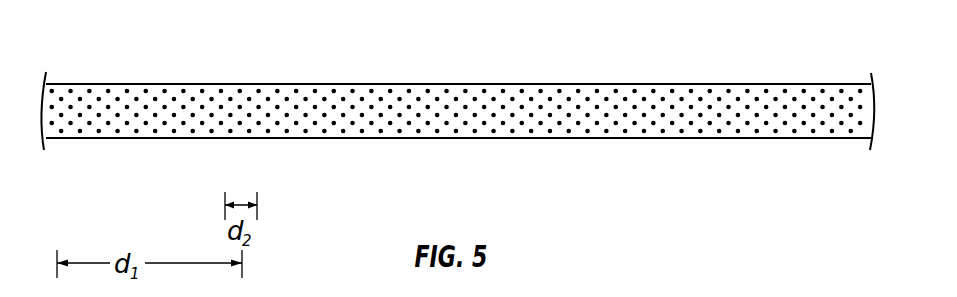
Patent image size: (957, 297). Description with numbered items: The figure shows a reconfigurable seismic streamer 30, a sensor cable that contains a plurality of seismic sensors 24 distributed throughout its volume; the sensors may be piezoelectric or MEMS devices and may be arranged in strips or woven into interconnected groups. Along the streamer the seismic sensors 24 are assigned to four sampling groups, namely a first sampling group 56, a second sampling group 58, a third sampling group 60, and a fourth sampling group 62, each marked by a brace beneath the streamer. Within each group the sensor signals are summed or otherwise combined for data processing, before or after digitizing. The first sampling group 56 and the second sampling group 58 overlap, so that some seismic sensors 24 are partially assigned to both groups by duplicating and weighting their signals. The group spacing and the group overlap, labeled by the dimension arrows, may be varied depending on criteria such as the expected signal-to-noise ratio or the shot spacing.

The seismic sensors 24 is at (184, 91).
The reconfigurable seismic streamer 30 is at (758, 78).
The first sampling group 56 is at (62, 147).
The second sampling group 58 is at (408, 170).
The third sampling group 60 is at (618, 147).
The fourth sampling group 62 is at (862, 147).